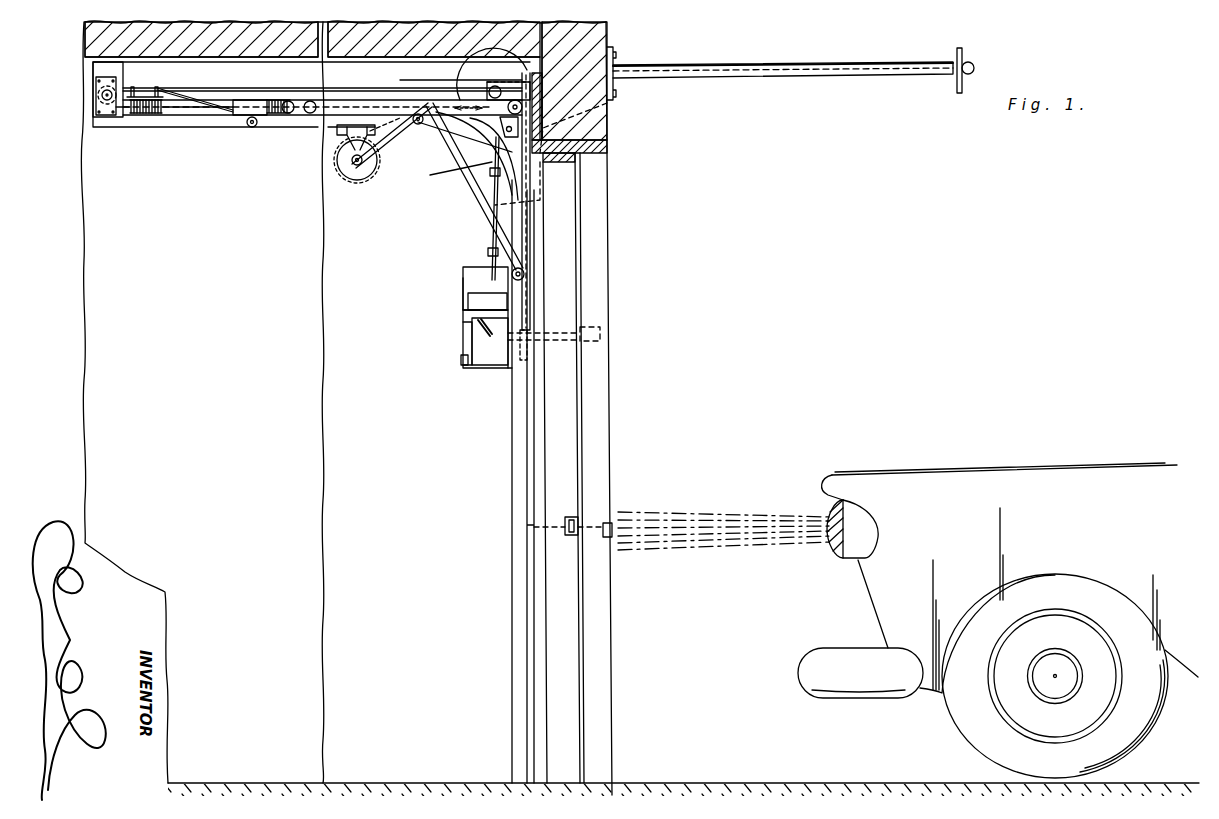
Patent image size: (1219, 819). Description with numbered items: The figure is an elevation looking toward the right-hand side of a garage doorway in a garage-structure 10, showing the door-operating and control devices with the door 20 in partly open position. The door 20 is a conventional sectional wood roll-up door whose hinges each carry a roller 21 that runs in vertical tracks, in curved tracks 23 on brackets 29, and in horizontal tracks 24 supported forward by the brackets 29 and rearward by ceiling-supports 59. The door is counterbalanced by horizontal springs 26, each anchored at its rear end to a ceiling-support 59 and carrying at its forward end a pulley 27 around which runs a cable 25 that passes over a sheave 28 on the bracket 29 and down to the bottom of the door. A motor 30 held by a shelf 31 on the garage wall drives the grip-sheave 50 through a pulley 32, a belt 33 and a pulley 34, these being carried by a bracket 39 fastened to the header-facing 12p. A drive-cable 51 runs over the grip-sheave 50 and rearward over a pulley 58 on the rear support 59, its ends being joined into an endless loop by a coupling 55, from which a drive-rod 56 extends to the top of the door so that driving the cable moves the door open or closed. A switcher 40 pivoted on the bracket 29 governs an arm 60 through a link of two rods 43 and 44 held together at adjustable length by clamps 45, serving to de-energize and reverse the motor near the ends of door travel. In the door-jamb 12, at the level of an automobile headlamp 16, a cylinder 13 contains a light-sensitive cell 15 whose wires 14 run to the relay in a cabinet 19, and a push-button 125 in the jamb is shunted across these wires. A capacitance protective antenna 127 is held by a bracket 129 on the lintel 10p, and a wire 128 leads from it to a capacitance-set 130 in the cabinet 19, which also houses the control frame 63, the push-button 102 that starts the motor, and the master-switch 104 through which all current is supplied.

The garage-structure 10 is at (615, 30).
The lintel 10p is at (612, 118).
The door-jamb 12 is at (598, 262).
The header-facing 12p is at (551, 195).
The cylinder 13 is at (606, 520).
The wires 14 is at (527, 450).
The light-sensitive cell 15 is at (570, 540).
The automobile headlamp 16 is at (836, 550).
The cabinet 19 is at (458, 316).
The door 20 is at (256, 128).
The roller 21 is at (415, 126).
The curved tracks 23 is at (480, 155).
The horizontal tracks 24 is at (195, 127).
The cable 25 is at (352, 100).
The horizontal springs 26 is at (148, 115).
The pulley 27 is at (310, 114).
The sheave 28 is at (508, 110).
The brackets 29 is at (493, 205).
The motor 30 is at (372, 172).
The shelf 31 is at (337, 130).
The pulley 32 is at (345, 178).
The belt 33 is at (452, 80).
The pulley 34 is at (476, 78).
The bracket 39 is at (536, 75).
The switcher 40 is at (498, 150).
The rod 43 is at (478, 172).
The rod 44 is at (493, 226).
The clamps 45 is at (490, 252).
The grip-sheave 50 is at (518, 86).
The drive-cable 51 is at (243, 90).
The coupling 55 is at (145, 90).
The drive-rod 56 is at (195, 98).
The pulley 58 is at (100, 95).
The ceiling-supports 59 is at (93, 66).
The arm 60 is at (480, 328).
The frame 63 is at (470, 342).
The push-button 102 is at (490, 370).
The master-switch 104 is at (460, 362).
The push-button 125 is at (600, 334).
The capacitance protective antenna 127 is at (962, 50).
The wire 128 is at (972, 62).
The bracket 129 is at (905, 77).
The capacitance-set 130 is at (468, 293).